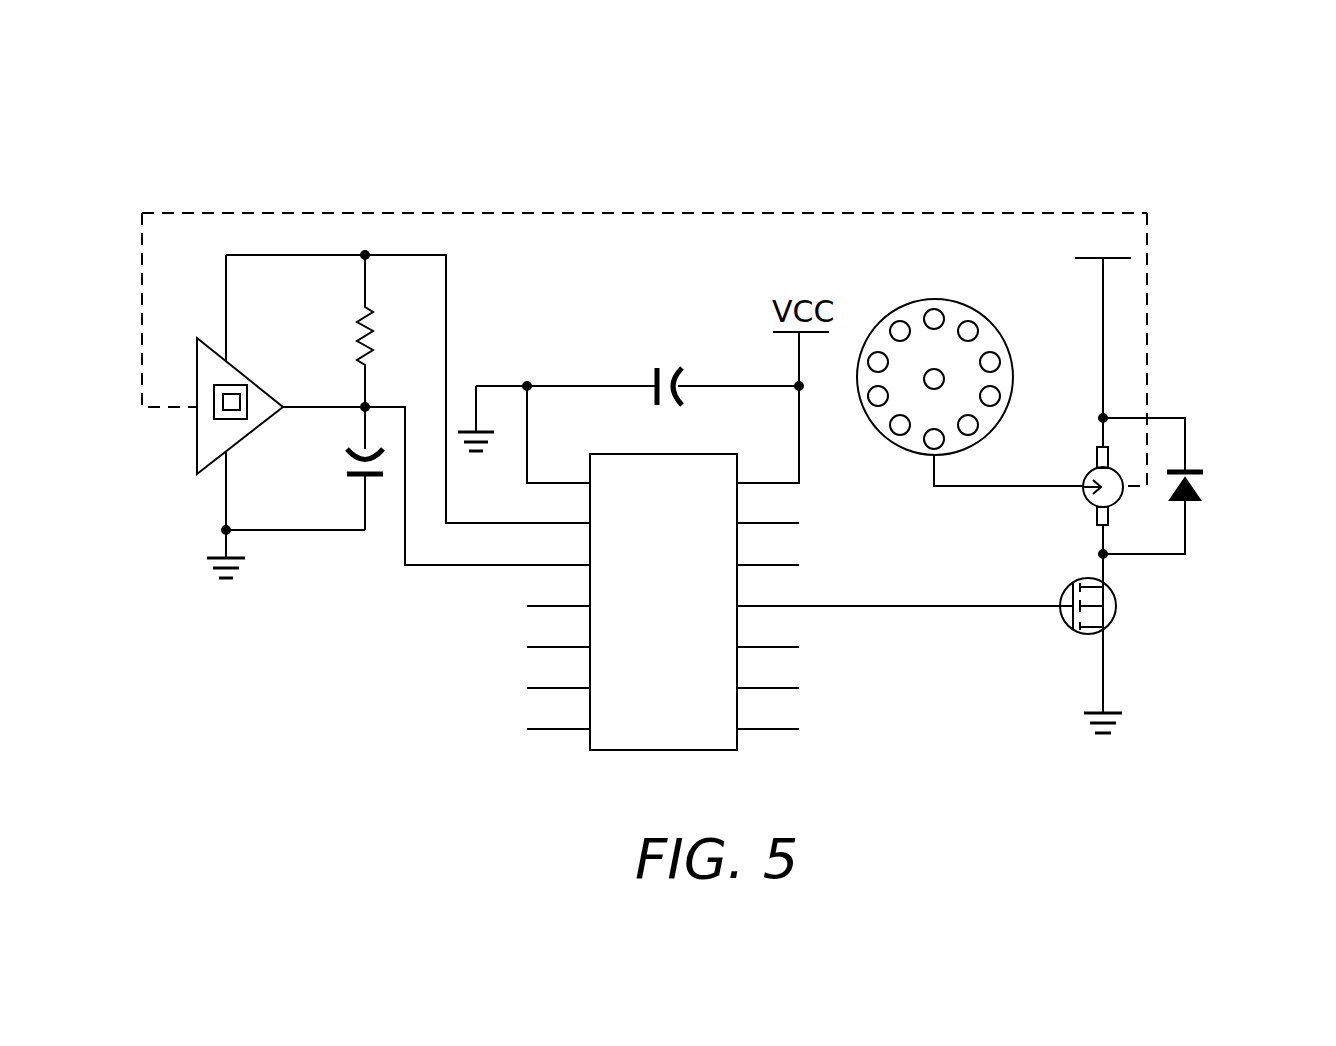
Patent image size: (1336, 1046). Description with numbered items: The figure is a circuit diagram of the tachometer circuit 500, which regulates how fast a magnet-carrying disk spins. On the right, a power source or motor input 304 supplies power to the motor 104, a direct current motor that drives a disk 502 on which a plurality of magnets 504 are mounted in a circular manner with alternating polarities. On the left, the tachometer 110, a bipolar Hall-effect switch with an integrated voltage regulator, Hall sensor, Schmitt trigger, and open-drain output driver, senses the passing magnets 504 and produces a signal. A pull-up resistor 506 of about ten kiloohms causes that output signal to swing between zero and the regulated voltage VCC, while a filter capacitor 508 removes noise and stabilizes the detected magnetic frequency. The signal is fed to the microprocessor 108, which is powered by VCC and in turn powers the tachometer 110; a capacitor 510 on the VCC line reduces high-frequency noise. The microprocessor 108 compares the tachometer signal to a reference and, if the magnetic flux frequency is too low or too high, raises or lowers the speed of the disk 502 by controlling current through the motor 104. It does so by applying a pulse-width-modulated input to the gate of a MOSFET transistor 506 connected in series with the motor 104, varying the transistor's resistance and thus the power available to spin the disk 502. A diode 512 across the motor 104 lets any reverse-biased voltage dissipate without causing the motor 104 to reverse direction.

The tachometer circuit 500 is at (574, 141).
The tachometer 110 is at (197, 437).
The resistor / transistor 506 is at (358, 335).
The filter capacitor 508 is at (347, 464).
The capacitor 510 is at (670, 368).
The microprocessor 108 is at (660, 750).
The disk 502 is at (917, 300).
The magnets 504 is at (982, 391).
The power source or motor input 304 is at (1103, 337).
The motor 104 is at (1083, 480).
The diode 512 is at (1203, 485).